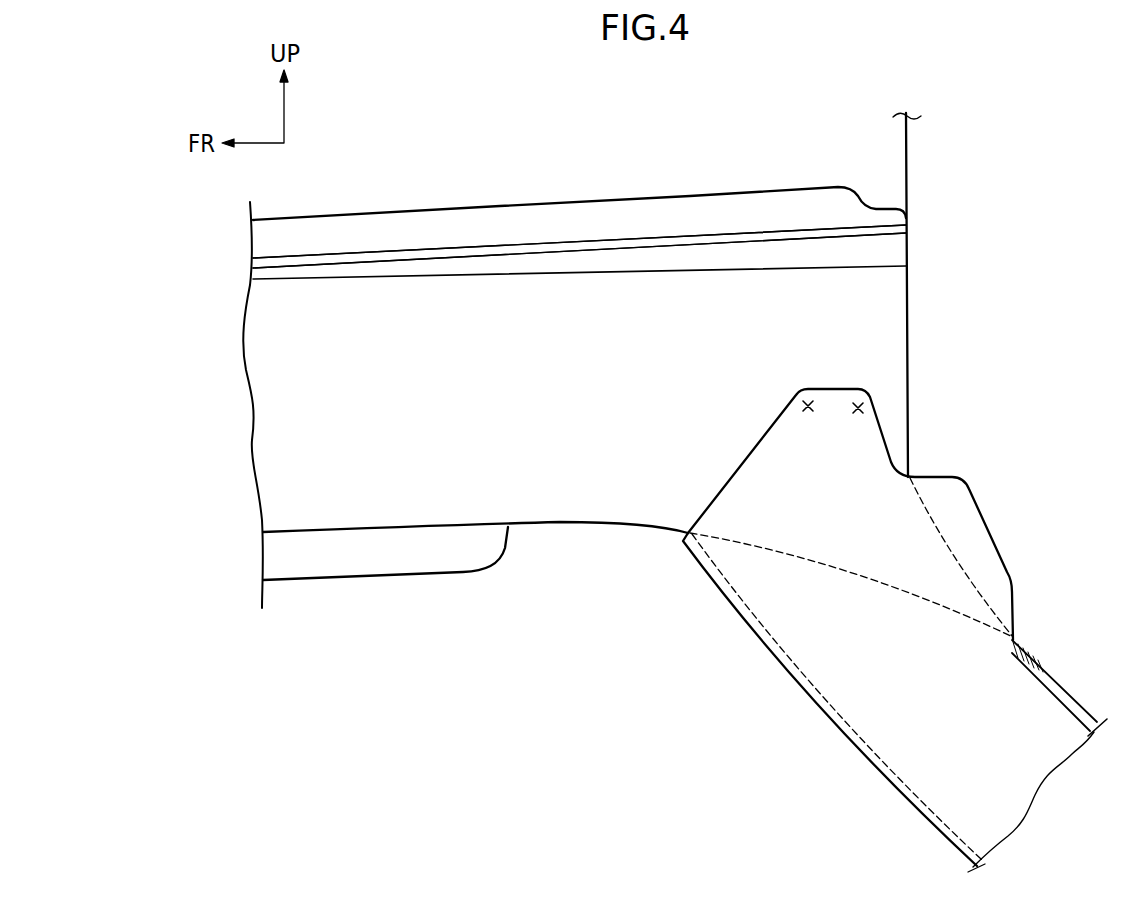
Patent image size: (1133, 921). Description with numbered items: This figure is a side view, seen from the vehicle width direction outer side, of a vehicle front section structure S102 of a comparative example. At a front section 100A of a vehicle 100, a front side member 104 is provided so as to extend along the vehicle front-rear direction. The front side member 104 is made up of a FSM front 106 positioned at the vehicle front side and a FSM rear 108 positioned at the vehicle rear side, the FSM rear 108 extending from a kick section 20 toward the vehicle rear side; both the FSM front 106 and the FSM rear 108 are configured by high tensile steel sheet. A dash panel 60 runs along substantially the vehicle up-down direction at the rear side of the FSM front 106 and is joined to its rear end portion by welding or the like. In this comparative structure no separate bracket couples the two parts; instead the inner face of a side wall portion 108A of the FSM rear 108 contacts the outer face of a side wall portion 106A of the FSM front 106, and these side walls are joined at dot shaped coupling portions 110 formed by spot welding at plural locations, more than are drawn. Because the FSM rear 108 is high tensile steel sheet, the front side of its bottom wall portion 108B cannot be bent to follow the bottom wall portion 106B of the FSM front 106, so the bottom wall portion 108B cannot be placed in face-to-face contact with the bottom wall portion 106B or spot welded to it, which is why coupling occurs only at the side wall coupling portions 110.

The vehicle 100 is at (436, 338).
The front section 100A is at (539, 154).
The front side member 104 is at (688, 196).
The FSM front 106 is at (769, 190).
The side wall portion 106A is at (627, 330).
The bottom wall portion 106B is at (577, 527).
The FSM rear 108 is at (895, 607).
The side wall portion 108A is at (859, 491).
The bottom wall portion 108B is at (785, 672).
The coupling portions 110 is at (816, 403).
The dash panel 60 is at (922, 151).
The kick section 20 is at (847, 699).
The vehicle front section structure S102 is at (551, 643).